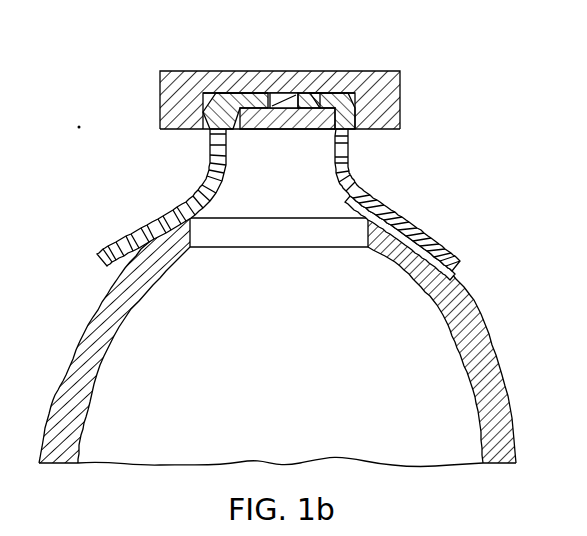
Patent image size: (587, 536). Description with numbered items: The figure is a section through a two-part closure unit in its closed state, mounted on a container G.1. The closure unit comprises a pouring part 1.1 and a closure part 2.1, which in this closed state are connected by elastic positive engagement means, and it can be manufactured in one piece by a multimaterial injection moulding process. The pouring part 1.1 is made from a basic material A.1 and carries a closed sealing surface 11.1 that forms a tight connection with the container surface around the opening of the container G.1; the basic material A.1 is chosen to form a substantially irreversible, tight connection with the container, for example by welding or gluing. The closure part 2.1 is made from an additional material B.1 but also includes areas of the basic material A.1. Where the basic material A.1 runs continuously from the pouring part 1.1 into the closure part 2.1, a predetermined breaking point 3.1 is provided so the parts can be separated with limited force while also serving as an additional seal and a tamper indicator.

The pouring part 1.1 is at (174, 167).
The closure part 2.1 is at (413, 95).
The predetermined breaking point 3.1 is at (226, 78).
The basic material A.1 is at (355, 187).
The additional material B.1 is at (387, 78).
The closed sealing surface 11.1 is at (425, 230).
The container G.1 is at (480, 352).